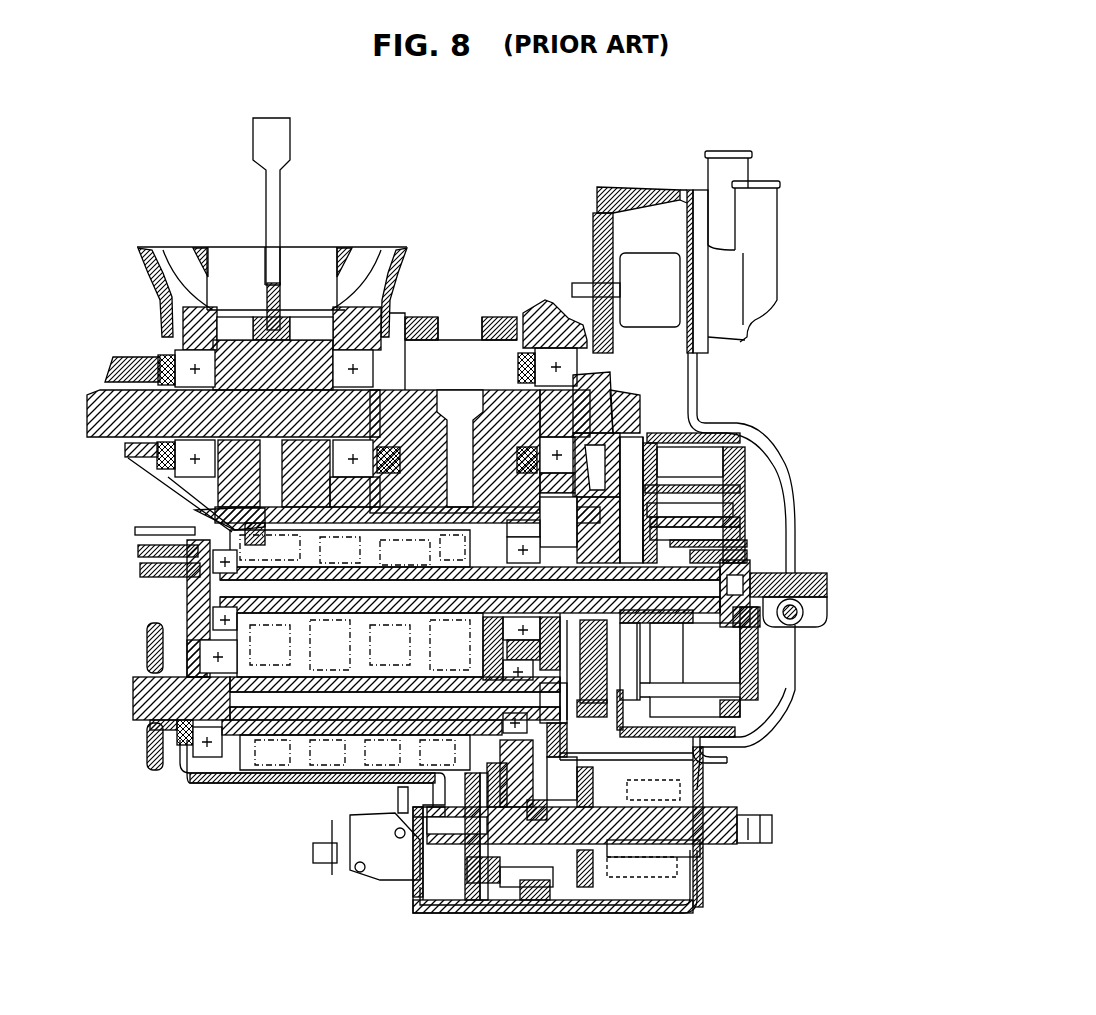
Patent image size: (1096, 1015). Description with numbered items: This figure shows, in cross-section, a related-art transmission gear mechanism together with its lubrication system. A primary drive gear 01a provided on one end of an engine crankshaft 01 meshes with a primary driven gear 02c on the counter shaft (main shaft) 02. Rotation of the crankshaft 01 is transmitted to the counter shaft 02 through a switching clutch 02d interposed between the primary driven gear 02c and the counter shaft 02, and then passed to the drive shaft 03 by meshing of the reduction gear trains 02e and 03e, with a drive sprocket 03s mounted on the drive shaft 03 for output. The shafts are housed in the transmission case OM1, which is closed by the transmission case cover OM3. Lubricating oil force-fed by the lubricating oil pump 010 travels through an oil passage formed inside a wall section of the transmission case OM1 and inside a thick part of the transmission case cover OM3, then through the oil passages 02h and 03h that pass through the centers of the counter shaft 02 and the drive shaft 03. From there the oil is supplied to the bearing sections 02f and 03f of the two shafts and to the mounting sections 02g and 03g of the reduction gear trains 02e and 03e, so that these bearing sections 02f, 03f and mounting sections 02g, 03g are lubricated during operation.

The engine crankshaft 01 is at (623, 403).
The primary drive gear 01a is at (615, 378).
The counter shaft (main shaft) 02 is at (700, 527).
The primary driven gear 02c is at (715, 700).
The switching clutch 02d is at (735, 660).
The reduction gear train 02e is at (235, 537).
The bearing section 02f is at (197, 587).
The mounting section 02g is at (225, 540).
The oil passage 02h is at (195, 545).
The drive shaft (counter shaft) 03 is at (150, 697).
The reduction gear train 03e is at (217, 620).
The bearing section 03f is at (187, 743).
The mounting section 03g is at (320, 735).
The oil passage 03h is at (182, 662).
The drive sprocket 03s is at (150, 740).
The transmission case OM1 is at (212, 777).
The transmission case cover OM3 is at (700, 765).
The lubricating oil pump 010 is at (485, 905).